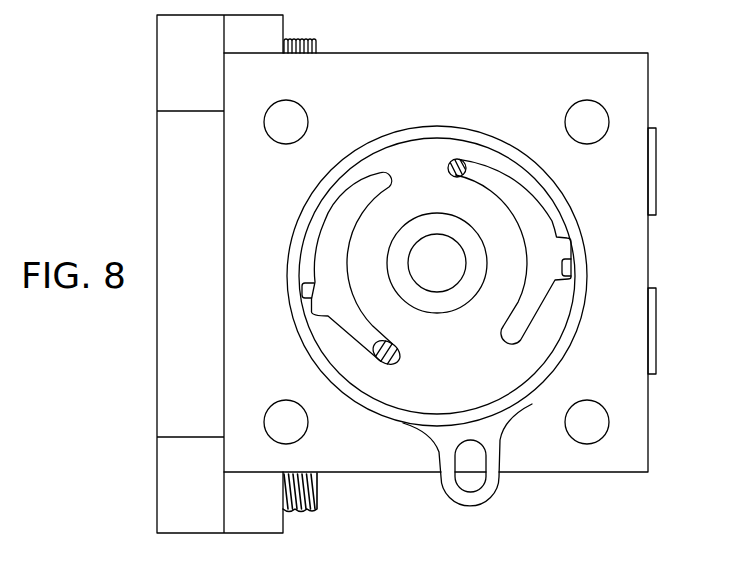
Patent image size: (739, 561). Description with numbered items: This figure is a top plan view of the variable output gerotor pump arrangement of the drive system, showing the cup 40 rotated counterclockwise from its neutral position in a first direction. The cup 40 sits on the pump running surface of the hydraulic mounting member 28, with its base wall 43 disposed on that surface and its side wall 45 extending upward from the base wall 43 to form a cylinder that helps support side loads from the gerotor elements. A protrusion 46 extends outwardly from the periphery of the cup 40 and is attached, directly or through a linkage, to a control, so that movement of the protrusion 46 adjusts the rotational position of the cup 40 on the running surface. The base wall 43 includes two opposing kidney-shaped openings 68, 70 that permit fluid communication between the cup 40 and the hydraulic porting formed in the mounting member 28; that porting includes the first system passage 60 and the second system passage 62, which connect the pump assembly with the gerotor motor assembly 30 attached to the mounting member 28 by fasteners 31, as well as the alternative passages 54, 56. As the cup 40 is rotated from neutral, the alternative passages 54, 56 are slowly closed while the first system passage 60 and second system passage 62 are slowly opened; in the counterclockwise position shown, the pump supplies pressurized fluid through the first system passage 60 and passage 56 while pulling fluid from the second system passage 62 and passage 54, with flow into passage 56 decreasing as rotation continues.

The hydraulic mounting member 28 is at (648, 424).
The gerotor motor assembly 30 is at (122, 62).
The fasteners 31 is at (318, 492).
The cup 40 is at (440, 296).
The base wall 43 is at (497, 386).
The side wall 45 is at (390, 130).
The protrusion 46 is at (492, 498).
The alternative passage 54 is at (574, 268).
The alternative passage 56 is at (304, 291).
The first system passage 60 is at (399, 355).
The second system passage 62 is at (450, 166).
The kidney-shaped opening 68 is at (333, 222).
The kidney-shaped opening 70 is at (556, 219).